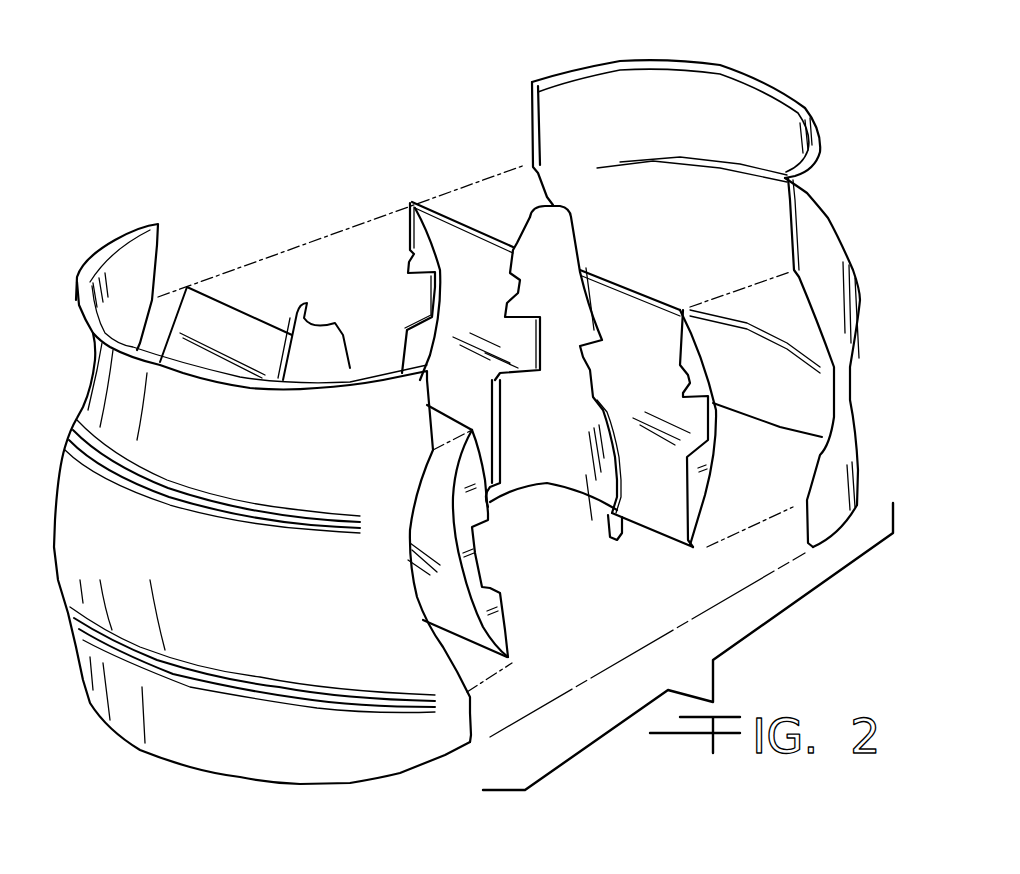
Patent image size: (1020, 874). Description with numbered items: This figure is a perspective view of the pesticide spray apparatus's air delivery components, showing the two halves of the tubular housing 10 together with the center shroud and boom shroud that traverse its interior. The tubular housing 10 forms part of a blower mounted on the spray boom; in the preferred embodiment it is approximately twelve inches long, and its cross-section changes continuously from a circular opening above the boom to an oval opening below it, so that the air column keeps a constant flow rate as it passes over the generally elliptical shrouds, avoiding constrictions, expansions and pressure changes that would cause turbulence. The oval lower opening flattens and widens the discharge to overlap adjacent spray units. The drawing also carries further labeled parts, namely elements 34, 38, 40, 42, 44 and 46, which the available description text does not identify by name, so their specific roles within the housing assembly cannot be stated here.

The tubular housing 10 is at (328, 745).
The curved partition panel 34 is at (557, 458).
The notched edge strips 38 is at (490, 507).
The slot 40 is at (597, 518).
The notched arcuate band 42 is at (503, 610).
The rim 44 is at (775, 78).
The direction arrow 46 is at (476, 708).